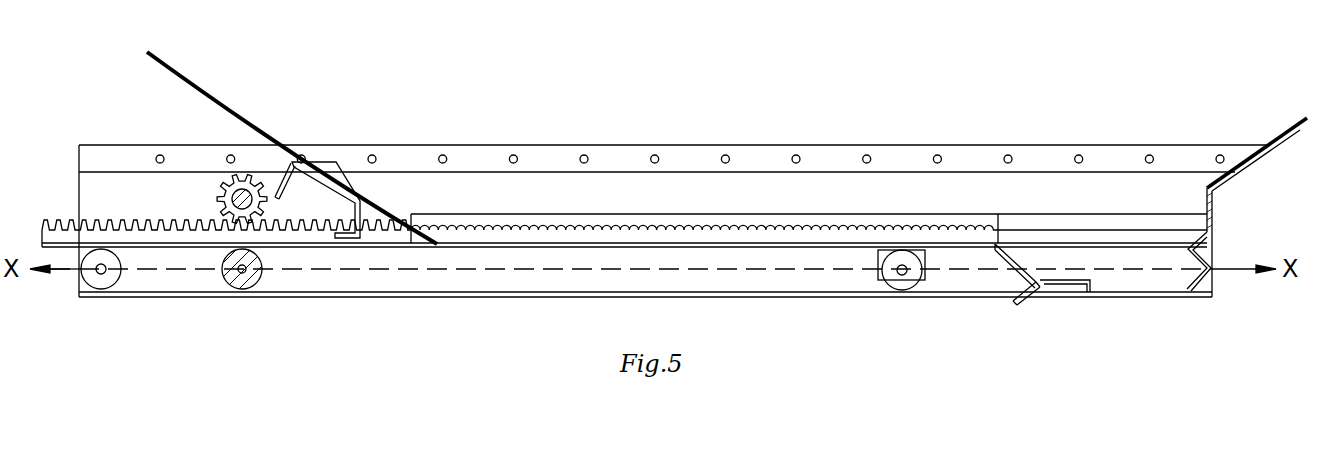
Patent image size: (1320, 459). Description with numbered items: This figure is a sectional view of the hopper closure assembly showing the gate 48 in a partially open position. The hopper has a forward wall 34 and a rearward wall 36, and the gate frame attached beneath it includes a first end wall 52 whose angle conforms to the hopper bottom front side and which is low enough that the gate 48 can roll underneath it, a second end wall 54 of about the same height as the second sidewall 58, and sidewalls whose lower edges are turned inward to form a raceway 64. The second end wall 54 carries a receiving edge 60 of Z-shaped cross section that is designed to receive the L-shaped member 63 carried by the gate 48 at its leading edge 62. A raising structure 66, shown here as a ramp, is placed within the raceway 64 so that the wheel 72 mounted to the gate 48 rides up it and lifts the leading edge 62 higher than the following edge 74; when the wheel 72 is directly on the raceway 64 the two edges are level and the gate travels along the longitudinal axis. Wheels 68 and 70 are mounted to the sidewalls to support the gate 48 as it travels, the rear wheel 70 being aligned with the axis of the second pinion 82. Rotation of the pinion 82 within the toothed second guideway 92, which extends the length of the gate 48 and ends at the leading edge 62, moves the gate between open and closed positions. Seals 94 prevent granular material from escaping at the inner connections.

The forward wall 34 is at (230, 104).
The rearward wall 36 is at (1291, 127).
The gate 48 is at (602, 248).
The first end wall 52 is at (334, 199).
The second end wall 54 is at (1213, 210).
The second sidewall 58 is at (687, 156).
The receiving edge 60 is at (1191, 270).
The leading edge 62 is at (1000, 243).
The L-shaped member 63 is at (1017, 262).
The raceway 64 is at (738, 284).
The raising structure 66 is at (1072, 287).
The wheel 68 is at (97, 283).
The rear wheel 70 is at (247, 287).
The wheel 72 is at (904, 287).
The following edge 74 is at (45, 240).
The second pinion 82 is at (218, 196).
The second guideway 92 is at (804, 238).
The seals 94 is at (512, 214).